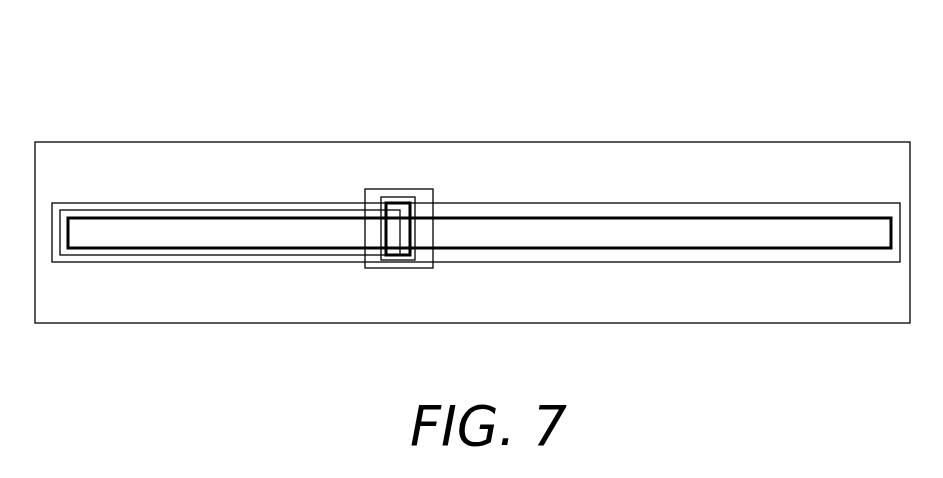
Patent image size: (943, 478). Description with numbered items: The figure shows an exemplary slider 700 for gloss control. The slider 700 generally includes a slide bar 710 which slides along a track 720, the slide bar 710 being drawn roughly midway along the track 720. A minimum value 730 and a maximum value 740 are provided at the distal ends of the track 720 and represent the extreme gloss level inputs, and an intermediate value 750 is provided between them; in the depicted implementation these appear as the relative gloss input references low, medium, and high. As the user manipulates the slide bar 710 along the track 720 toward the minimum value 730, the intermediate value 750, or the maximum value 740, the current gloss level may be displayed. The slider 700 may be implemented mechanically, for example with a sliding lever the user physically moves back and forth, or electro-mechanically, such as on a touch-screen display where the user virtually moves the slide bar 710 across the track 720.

The slider 700 is at (247, 80).
The slide bar 710 is at (402, 268).
The track 720 is at (593, 203).
The minimum value 730 is at (93, 287).
The maximum value 740 is at (860, 288).
The intermediate value 750 is at (505, 288).